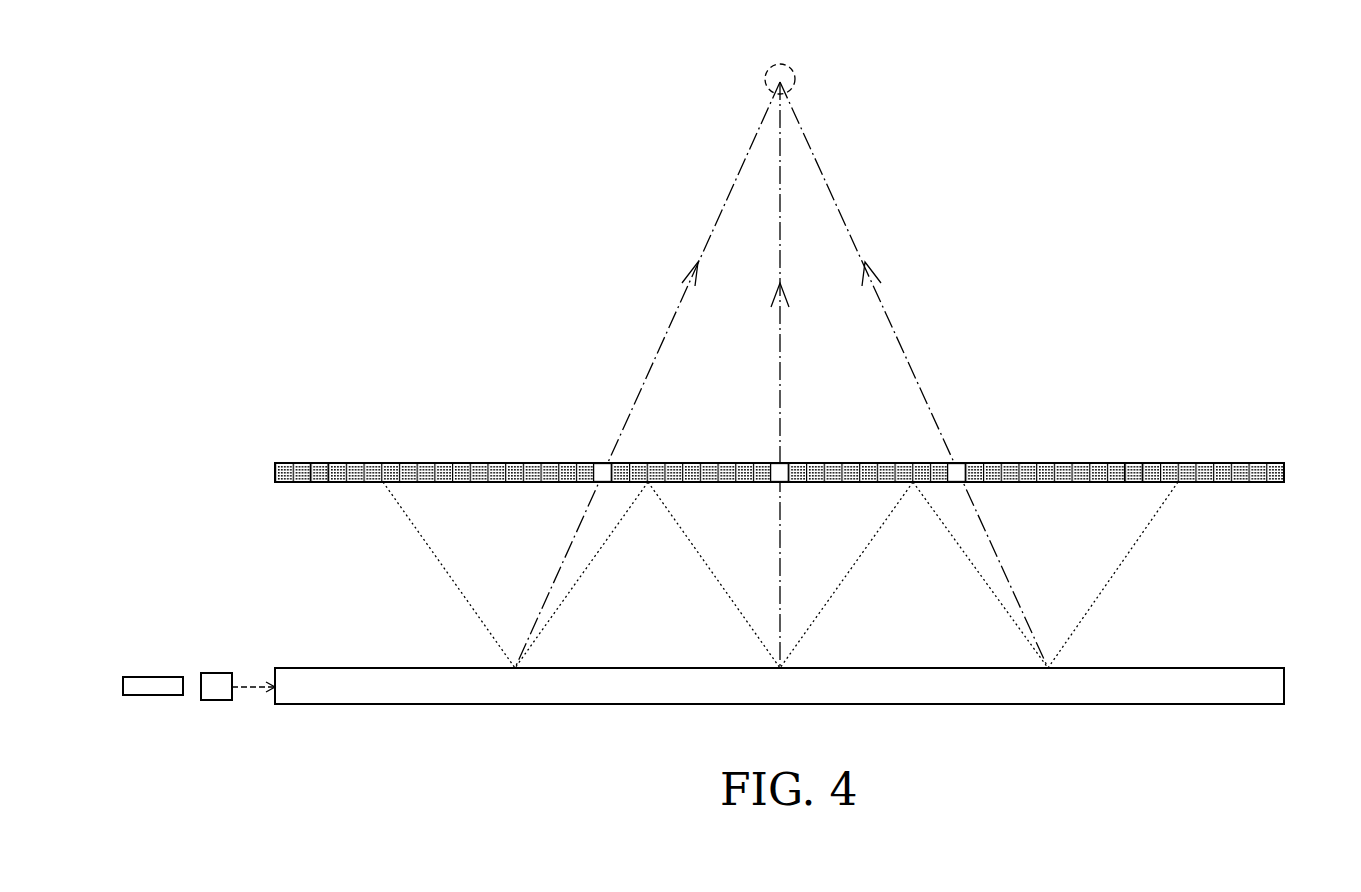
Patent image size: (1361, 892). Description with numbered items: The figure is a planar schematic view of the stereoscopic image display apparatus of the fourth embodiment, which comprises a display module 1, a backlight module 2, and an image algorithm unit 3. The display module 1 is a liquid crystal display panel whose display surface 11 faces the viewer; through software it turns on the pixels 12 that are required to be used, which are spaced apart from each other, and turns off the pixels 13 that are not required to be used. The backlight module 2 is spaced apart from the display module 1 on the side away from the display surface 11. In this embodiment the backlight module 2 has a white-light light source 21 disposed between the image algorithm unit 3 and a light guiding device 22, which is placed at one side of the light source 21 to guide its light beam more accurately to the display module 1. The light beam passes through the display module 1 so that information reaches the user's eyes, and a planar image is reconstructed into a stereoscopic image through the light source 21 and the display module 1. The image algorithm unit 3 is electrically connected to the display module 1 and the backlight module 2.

The display module 1 is at (802, 443).
The display surface 11 is at (318, 463).
The pixels that are required to be used 12 is at (958, 465).
The pixels that are not required to be used 13 is at (1137, 476).
The backlight module 2 is at (813, 656).
The light source 21 is at (217, 688).
The light guiding device 22 is at (1185, 683).
The image algorithm unit 3 is at (158, 685).